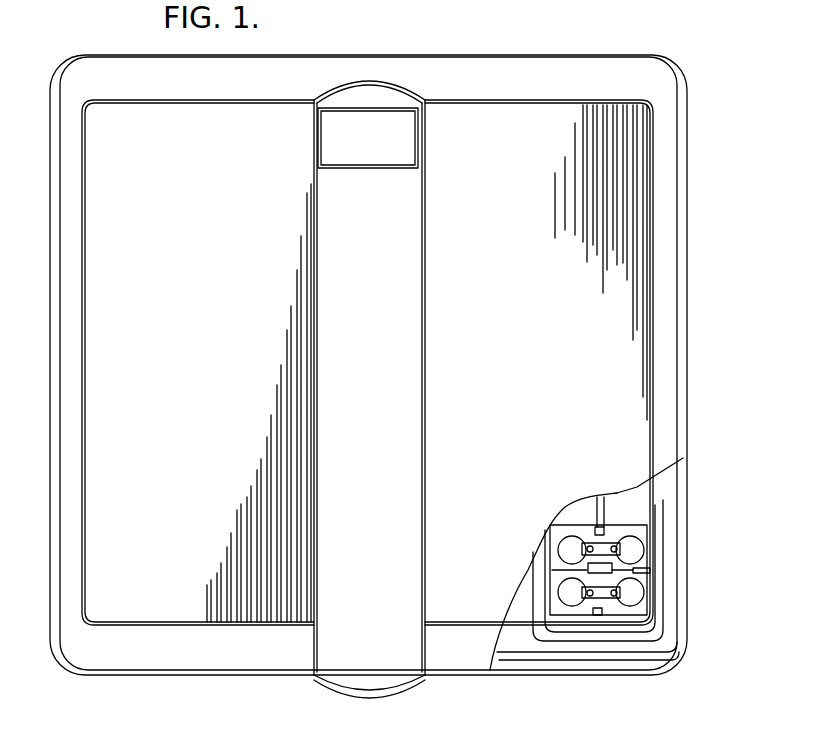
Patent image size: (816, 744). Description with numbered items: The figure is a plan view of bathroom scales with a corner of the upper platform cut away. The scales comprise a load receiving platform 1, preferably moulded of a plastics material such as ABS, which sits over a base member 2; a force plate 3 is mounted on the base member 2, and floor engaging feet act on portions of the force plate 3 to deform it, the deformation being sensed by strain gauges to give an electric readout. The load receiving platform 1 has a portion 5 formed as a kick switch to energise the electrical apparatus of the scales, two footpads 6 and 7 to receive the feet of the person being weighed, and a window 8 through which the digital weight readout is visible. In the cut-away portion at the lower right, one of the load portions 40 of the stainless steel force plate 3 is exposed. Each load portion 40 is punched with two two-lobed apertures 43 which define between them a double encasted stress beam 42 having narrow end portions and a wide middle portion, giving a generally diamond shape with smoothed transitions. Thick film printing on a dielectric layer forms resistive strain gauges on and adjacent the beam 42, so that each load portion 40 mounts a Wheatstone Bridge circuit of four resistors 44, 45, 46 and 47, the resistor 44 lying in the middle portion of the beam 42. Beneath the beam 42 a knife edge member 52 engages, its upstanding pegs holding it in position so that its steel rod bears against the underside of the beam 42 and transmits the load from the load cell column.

The load receiving platform 1 is at (662, 92).
The base member 2 is at (521, 652).
The force plate 3 is at (640, 502).
The kick switch portion 5 is at (398, 697).
The footpad 6 is at (118, 373).
The footpad 7 is at (647, 358).
The window 8 is at (403, 123).
The load portion 40 is at (640, 617).
The double encasted stress beam 42 is at (603, 583).
The aperture 43 is at (565, 537).
The resistor 44 is at (597, 565).
The resistor 45 is at (650, 571).
The resistor 46 is at (597, 527).
The resistor 47 is at (600, 615).
The knife edge member 52 is at (618, 551).